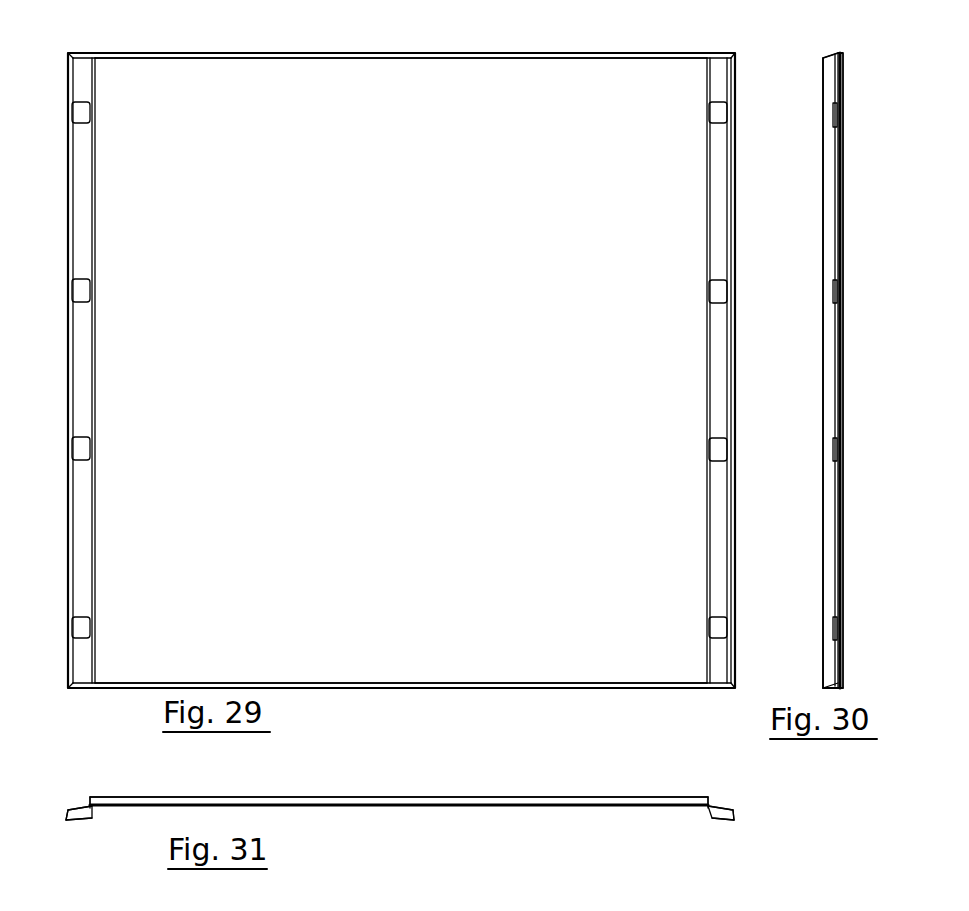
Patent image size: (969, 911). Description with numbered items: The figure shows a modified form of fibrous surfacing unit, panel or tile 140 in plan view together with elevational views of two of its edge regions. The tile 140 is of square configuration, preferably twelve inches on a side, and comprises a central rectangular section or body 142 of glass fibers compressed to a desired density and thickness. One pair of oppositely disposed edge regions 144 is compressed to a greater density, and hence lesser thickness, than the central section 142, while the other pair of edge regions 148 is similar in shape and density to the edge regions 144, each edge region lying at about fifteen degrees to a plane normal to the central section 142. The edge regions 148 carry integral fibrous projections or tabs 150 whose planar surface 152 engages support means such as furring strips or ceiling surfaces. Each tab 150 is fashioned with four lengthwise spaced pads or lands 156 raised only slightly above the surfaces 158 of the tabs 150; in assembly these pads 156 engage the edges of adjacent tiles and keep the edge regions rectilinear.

In FIG. 29, the surfacing unit, panel or tile 140 is at (425, 52).
In FIG. 30, the surfacing unit, panel or tile 140 is at (828, 50).
In FIG. 31, the surfacing unit, panel or tile 140 is at (712, 798).
In FIG. 29, the central rectangular section or body 142 is at (385, 385).
In FIG. 30, the central rectangular section or body 142 is at (824, 206).
In FIG. 31, the central rectangular section or body 142 is at (399, 789).
In FIG. 29, the edge regions 144 is at (218, 53).
In FIG. 30, the edge regions 144 is at (828, 688).
In FIG. 31, the edge regions 144 is at (492, 797).
In FIG. 29, the edge regions 148 is at (96, 164).
In FIG. 30, the edge regions 148 is at (830, 190).
In FIG. 31, the edge regions 148 is at (94, 800).
In FIG. 29, the projections or tabs 150 is at (92, 528).
In FIG. 30, the projections or tabs 150 is at (838, 350).
In FIG. 31, the projections or tabs 150 is at (88, 817).
In FIG. 30, the planar surface 152 is at (868, 40).
In FIG. 31, the planar surface 152 is at (70, 820).
In FIG. 29, the pads or lands 156 is at (87, 112).
In FIG. 30, the pads or lands 156 is at (833, 114).
In FIG. 31, the pads or lands 156 is at (76, 804).
In FIG. 29, the surfaces of the tabs 158 is at (82, 660).
In FIG. 30, the surfaces of the tabs 158 is at (828, 75).
In FIG. 31, the surfaces of the tabs 158 is at (66, 804).